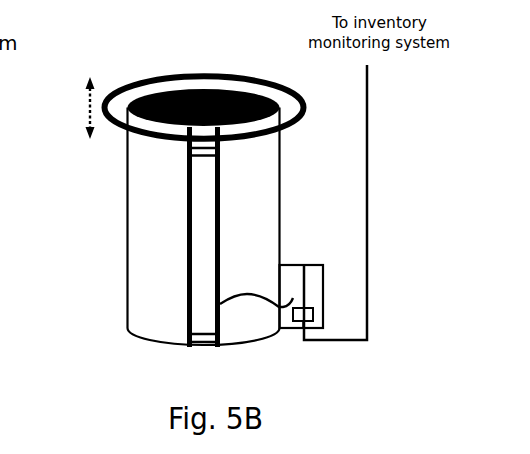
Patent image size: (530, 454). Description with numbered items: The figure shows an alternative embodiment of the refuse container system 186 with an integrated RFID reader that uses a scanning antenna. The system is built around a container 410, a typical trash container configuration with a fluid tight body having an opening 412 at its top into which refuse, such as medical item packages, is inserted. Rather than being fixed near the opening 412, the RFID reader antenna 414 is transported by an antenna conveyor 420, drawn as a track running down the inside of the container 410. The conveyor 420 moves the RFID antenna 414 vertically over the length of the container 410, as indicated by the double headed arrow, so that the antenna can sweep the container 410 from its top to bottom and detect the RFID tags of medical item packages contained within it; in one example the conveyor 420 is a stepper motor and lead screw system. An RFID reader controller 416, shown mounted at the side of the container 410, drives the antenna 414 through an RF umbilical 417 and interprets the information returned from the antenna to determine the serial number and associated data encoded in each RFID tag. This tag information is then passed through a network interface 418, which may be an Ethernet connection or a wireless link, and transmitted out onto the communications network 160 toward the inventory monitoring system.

The communications network 160 is at (367, 197).
The refuse container system 186 is at (120, 182).
The container 410 is at (127, 222).
The opening 412 is at (153, 95).
The RFID reader antenna 414 is at (233, 75).
The RFID reader controller 416 is at (290, 330).
The RF umbilical 417 is at (87, 116).
The network interface 418 is at (304, 308).
The antenna conveyor 420 is at (221, 210).